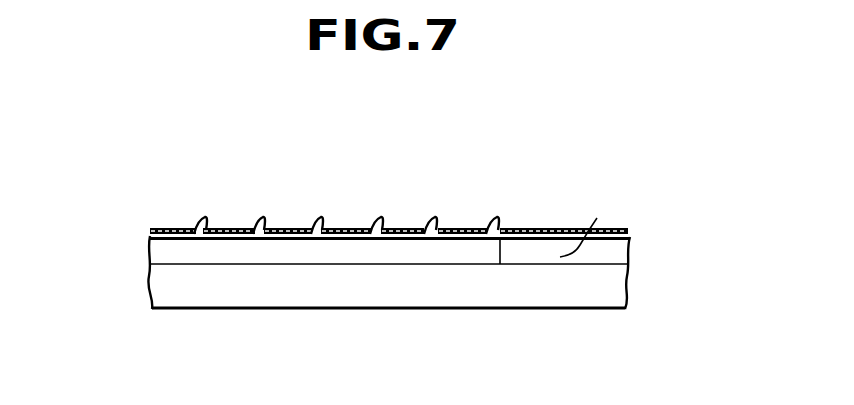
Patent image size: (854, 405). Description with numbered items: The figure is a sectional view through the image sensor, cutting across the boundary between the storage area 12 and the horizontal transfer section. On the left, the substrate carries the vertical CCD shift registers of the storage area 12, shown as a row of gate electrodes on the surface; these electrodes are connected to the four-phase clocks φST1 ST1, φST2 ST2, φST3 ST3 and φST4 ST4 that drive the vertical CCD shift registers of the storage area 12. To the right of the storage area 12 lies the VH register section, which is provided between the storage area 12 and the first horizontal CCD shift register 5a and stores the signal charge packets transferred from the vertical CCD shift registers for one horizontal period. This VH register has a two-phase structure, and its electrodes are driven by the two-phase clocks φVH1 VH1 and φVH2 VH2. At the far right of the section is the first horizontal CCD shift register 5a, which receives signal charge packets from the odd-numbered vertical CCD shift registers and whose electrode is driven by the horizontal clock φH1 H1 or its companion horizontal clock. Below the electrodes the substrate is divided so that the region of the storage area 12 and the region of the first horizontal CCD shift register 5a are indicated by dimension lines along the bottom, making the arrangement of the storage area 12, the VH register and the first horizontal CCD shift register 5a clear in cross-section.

The storage area 12 is at (500, 337).
The first horizontal CCD shift register 5a is at (678, 337).
The storage gate electrode driven by φ ST1 is at (172, 228).
The storage gate electrode driven by φ ST2 is at (229, 228).
The storage gate electrode driven by φ ST3 is at (289, 228).
The storage gate electrode driven by φ ST4 is at (345, 228).
The transfer gate electrode driven by φ VH1 is at (405, 228).
The transfer gate electrode driven by φ VH2 is at (459, 228).
The horizontal CCD gate electrode driven by φH1 or φH2 H1 is at (563, 228).